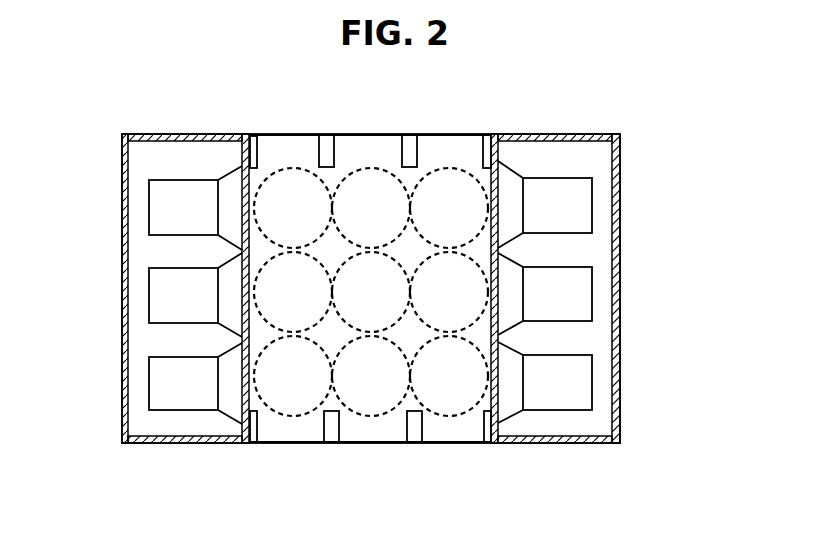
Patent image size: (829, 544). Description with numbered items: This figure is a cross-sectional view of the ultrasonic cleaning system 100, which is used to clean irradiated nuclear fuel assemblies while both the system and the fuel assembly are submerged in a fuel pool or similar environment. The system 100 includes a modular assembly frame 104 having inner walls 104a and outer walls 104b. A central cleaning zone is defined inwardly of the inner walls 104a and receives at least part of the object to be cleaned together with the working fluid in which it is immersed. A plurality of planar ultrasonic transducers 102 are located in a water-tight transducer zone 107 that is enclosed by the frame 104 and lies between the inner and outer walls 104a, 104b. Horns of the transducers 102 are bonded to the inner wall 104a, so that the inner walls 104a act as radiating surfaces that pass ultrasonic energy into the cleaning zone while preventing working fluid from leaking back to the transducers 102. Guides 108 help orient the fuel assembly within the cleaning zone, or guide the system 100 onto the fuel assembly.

The ultrasonic cleaning system 100 is at (80, 75).
The planar ultrasonic transducer 102 is at (592, 210).
The modular assembly frame 104 is at (620, 140).
The inner wall 104a is at (496, 158).
The outer wall 104b is at (610, 258).
The transducer zone 107 is at (200, 173).
The guide 108 is at (422, 425).